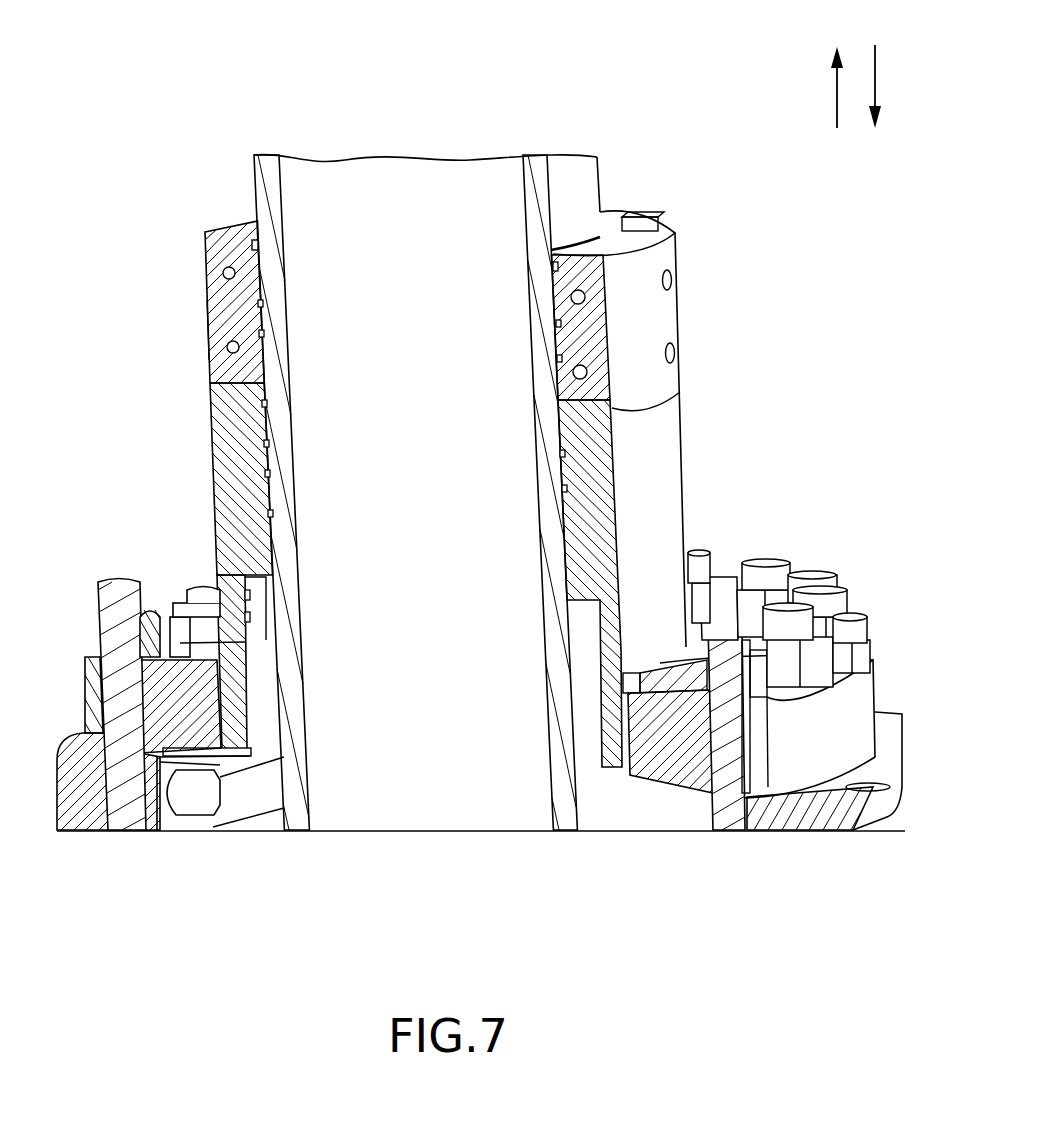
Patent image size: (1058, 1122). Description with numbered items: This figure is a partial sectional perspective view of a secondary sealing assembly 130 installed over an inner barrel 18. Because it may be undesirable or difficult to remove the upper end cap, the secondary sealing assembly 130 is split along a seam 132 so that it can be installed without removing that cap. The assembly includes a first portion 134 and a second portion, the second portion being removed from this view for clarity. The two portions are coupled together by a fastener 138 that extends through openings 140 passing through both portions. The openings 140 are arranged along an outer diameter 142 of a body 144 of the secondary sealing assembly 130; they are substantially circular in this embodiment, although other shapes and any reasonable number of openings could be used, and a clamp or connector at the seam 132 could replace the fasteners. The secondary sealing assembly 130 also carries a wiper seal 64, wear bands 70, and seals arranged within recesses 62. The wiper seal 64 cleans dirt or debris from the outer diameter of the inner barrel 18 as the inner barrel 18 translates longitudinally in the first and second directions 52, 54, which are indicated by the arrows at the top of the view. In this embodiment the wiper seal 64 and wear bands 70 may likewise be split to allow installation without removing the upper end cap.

The inner barrel 18 is at (535, 160).
The first direction 52 is at (837, 98).
The second direction 54 is at (875, 67).
The recess 62 is at (234, 322).
The wiper seal 64 is at (253, 245).
The wear band 70 is at (223, 279).
The secondary sealing assembly 130 is at (662, 145).
The seam 132 is at (604, 334).
The first portion 134 is at (152, 210).
The fastener 138 is at (585, 295).
The opening 140 is at (671, 280).
The outer diameter 142 is at (221, 373).
The body 144 is at (188, 323).